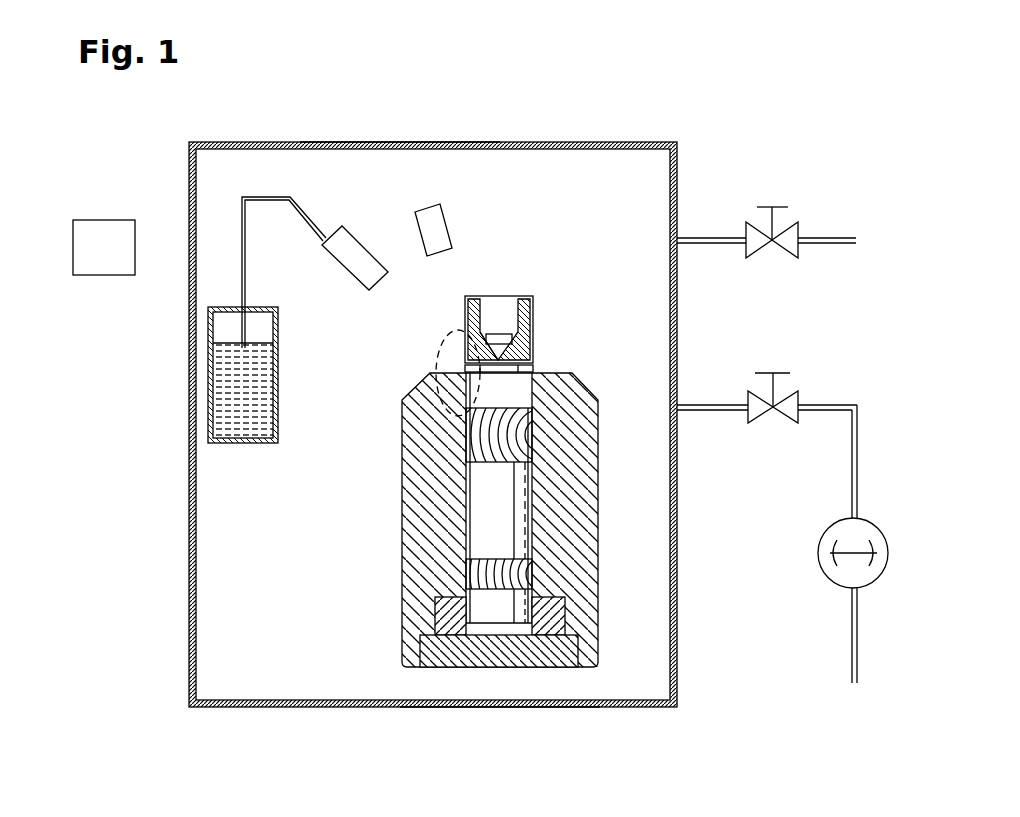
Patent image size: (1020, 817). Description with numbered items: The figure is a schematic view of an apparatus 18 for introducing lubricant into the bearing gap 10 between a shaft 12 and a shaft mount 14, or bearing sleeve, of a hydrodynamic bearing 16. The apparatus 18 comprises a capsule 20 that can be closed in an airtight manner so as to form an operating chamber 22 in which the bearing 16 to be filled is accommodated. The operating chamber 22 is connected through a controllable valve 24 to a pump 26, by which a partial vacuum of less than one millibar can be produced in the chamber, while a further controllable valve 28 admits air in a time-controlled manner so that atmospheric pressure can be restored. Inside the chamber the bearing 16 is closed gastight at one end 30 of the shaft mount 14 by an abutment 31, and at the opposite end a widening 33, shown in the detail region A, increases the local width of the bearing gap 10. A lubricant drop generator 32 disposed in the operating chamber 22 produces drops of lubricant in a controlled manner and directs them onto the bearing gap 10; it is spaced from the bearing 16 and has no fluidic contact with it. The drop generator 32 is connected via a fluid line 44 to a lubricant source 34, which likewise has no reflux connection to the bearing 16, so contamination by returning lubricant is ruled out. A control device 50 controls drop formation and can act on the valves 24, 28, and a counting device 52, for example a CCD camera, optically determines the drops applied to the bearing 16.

The bearing gap 10 is at (535, 370).
The shaft 12 is at (530, 318).
The shaft mount 14 is at (585, 432).
The hydrodynamic bearing 16 is at (392, 520).
The apparatus 18 is at (676, 127).
The capsule 20 is at (499, 708).
The operating chamber 22 is at (374, 167).
The controllable valve 24 is at (771, 422).
The pump 26 is at (843, 578).
The controllable valve 28 is at (770, 250).
The end of the shaft mount 30 is at (546, 668).
The abutment 31 is at (458, 655).
The lubricant drop generator 32 is at (355, 268).
The widening 33 is at (470, 343).
The lubricant source 34 is at (212, 390).
The fluid line 44 is at (310, 210).
The control device 50 is at (102, 235).
The counting device 52 is at (431, 222).
The detail region A is at (462, 333).